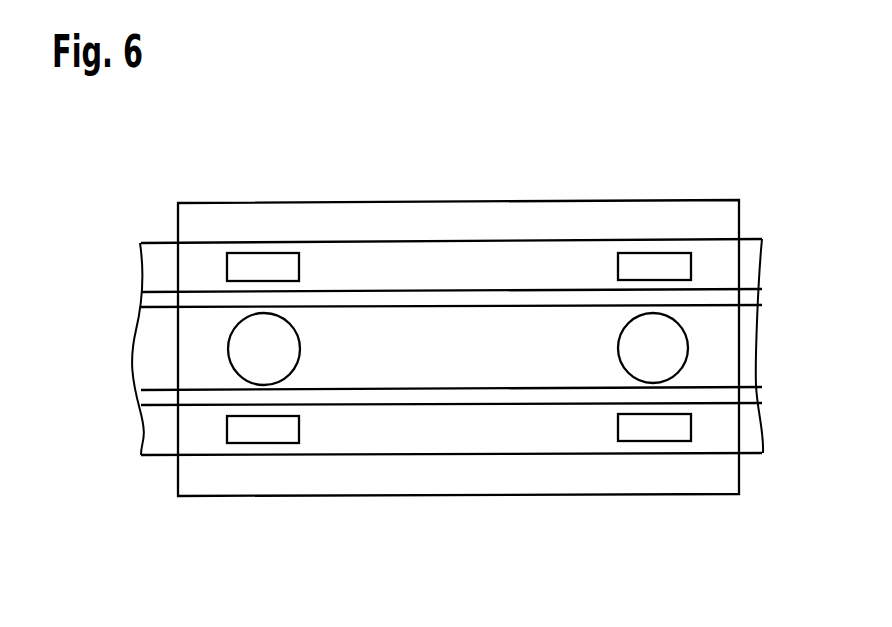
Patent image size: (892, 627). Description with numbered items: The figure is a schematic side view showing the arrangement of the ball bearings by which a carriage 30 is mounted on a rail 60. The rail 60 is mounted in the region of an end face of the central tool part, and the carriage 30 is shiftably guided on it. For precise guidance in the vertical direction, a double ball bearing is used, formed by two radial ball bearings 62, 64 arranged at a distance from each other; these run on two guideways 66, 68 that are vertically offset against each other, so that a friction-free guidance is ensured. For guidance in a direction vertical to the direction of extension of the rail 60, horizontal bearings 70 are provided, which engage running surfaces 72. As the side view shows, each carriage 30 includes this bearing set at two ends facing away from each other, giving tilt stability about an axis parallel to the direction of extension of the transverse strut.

The carriage 30 is at (510, 496).
The rail 60 is at (123, 242).
The radial ball bearing 62 is at (458, 270).
The radial ball bearing 64 is at (277, 335).
The guideway 66 is at (446, 309).
The guideway 68 is at (432, 372).
The horizontal bearing 70 is at (262, 263).
The running surface 72 is at (532, 275).